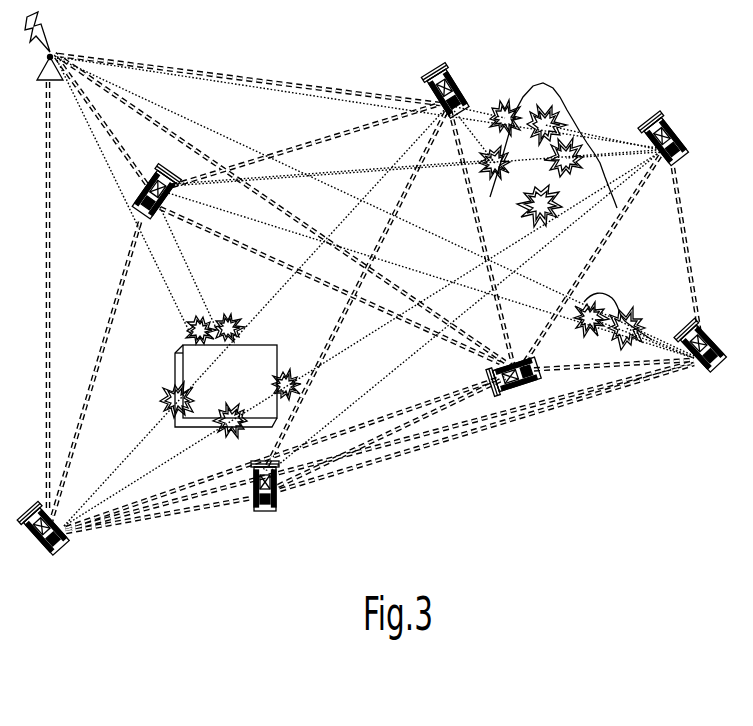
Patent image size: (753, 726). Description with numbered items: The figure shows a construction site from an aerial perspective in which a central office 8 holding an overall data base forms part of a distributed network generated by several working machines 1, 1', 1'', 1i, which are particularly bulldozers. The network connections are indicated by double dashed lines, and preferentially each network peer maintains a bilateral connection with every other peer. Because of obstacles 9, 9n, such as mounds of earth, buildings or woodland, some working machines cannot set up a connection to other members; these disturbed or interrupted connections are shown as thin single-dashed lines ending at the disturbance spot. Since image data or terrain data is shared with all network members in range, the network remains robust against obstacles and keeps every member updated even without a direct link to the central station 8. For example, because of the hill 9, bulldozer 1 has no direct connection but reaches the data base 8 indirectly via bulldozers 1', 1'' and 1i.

The central office 8 is at (54, 56).
The working machine 1i is at (457, 82).
The working machine 1 is at (670, 135).
The working machine 1' is at (514, 407).
The working machine 1'' is at (701, 366).
The obstacle 9 is at (556, 92).
The obstacle 9n is at (620, 300).